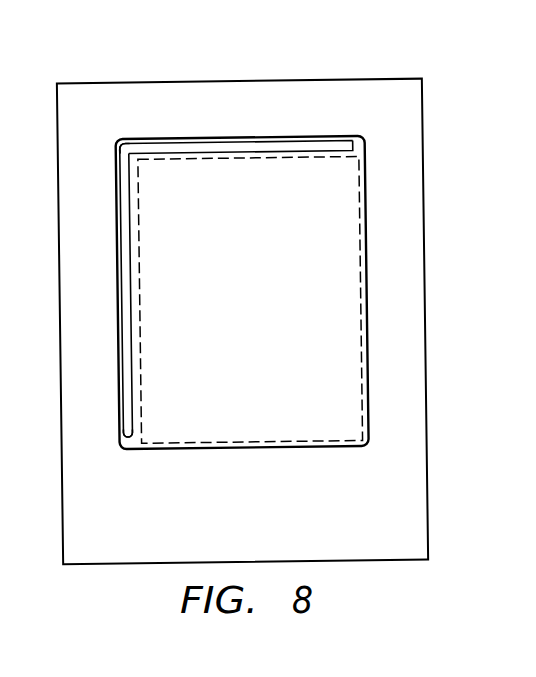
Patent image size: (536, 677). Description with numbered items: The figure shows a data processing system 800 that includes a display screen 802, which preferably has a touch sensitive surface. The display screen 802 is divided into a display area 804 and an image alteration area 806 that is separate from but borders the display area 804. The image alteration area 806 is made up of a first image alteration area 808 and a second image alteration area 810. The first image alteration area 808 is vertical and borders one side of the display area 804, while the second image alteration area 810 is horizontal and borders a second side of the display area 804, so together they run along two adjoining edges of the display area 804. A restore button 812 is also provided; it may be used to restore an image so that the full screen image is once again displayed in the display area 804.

The data processing system 800 is at (366, 60).
The display screen 802 is at (272, 308).
The display area 804 is at (308, 450).
The image alteration area 806 is at (129, 434).
The first image alteration area 808 is at (119, 276).
The second image alteration area 810 is at (241, 147).
The restore button 812 is at (126, 147).